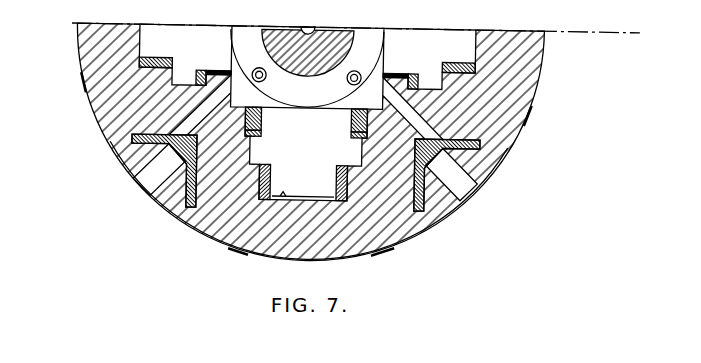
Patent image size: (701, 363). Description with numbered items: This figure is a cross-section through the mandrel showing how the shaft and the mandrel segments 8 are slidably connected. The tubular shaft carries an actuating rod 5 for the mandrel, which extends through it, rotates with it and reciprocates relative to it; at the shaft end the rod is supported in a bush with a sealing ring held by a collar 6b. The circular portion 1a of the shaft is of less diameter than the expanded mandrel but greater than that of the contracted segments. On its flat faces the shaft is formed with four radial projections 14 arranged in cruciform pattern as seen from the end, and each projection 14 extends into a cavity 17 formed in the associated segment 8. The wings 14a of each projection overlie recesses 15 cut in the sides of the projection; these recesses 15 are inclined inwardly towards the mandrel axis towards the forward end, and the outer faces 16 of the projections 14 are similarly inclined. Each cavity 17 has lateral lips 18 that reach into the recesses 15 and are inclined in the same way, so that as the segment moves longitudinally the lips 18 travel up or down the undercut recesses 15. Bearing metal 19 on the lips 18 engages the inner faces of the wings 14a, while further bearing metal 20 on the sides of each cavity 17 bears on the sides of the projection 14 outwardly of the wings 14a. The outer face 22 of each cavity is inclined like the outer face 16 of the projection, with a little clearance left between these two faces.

The circular portion of the shaft 1a is at (84, 82).
The actuating rod 5 is at (310, 63).
The collar 6b is at (370, 35).
The mandrel segment 8 is at (301, 258).
The radial projection 14 is at (142, 43).
The wing 14a is at (188, 83).
The recess 15 is at (202, 68).
The outer face of the projection 16 is at (140, 32).
The cavity 17 is at (175, 82).
The lateral lip 18 is at (212, 68).
The bearing metal 19 is at (232, 74).
The bearing metal 20 is at (150, 60).
The outer face of the cavity 22 is at (336, 195).